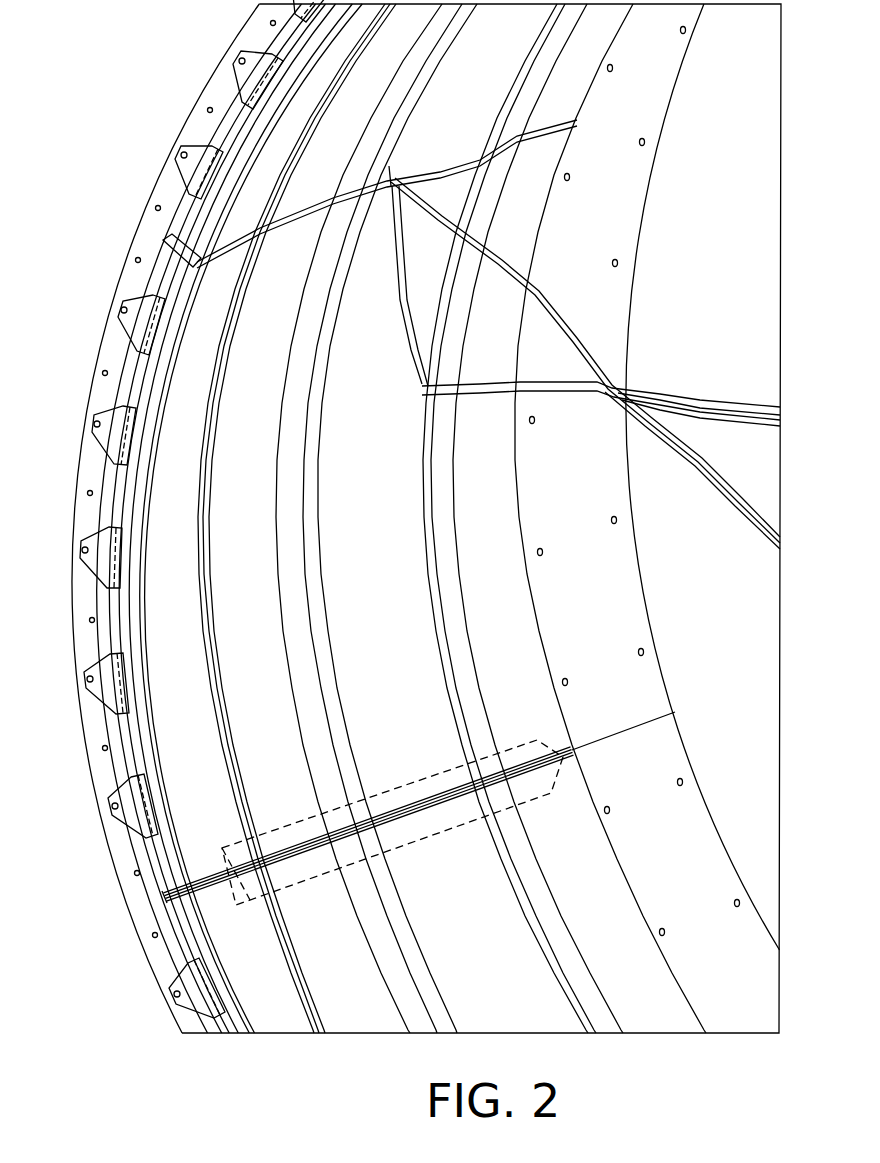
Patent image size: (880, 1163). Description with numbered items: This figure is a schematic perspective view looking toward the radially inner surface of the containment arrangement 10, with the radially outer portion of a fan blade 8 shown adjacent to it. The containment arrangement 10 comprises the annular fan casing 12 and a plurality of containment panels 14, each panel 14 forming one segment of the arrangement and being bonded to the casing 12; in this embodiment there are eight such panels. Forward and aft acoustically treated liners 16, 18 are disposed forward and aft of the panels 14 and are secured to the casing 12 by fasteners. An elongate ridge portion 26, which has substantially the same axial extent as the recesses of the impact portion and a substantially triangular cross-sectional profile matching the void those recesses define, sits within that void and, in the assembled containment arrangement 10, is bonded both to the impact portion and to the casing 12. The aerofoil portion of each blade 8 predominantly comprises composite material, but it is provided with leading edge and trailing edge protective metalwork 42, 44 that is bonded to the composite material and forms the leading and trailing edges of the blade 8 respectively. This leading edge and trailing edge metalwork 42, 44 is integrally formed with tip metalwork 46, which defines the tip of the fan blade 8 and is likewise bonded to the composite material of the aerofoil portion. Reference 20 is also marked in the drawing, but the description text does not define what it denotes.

The containment arrangement 10 is at (118, 193).
The annular fan casing 12 is at (108, 780).
The containment panel 14 is at (250, 410).
The forward acoustically treated liner 16 is at (220, 842).
The aft acoustically treated liner 18 is at (637, 685).
The mounting brackets 20 is at (103, 563).
The elongate ridge portion 26 is at (293, 880).
The leading edge protective metalwork 42 is at (510, 253).
The trailing edge protective metalwork 44 is at (704, 400).
The tip metalwork 46 is at (410, 320).
The fan blade 8 is at (555, 350).